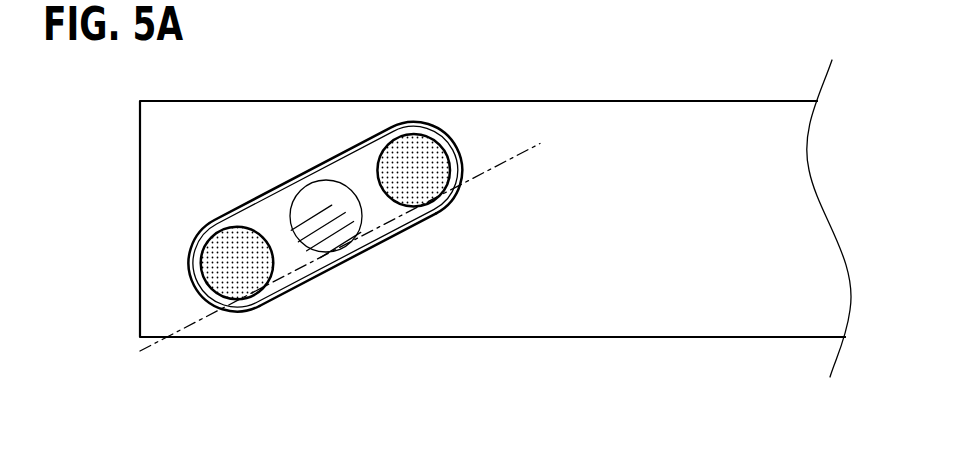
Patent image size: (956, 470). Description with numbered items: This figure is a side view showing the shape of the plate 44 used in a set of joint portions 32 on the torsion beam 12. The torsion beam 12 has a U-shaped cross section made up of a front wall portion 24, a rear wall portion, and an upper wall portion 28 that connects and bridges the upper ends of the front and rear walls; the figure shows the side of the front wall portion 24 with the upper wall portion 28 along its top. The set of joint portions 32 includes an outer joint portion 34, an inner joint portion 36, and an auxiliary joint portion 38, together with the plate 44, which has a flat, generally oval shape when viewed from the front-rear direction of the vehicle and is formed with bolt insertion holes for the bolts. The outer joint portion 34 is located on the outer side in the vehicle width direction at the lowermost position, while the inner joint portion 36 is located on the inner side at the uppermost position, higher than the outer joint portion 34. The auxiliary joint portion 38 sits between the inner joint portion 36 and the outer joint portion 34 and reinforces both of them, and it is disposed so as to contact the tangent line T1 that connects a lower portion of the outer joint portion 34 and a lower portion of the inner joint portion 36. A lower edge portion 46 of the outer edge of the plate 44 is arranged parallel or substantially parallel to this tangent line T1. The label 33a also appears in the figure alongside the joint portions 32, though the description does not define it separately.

The torsion beam 12 is at (665, 87).
The front wall portion 24 is at (732, 293).
The upper wall portion 28 is at (720, 100).
The joint portions 32 is at (302, 160).
The first wire group 33a is at (366, 215).
The outer joint portion 34 is at (236, 263).
The inner joint portion 36 is at (424, 178).
The auxiliary joint portion 38 is at (322, 216).
The plate 44 is at (432, 122).
The lower edge portion 46 is at (407, 229).
The tangent line T1 is at (535, 146).